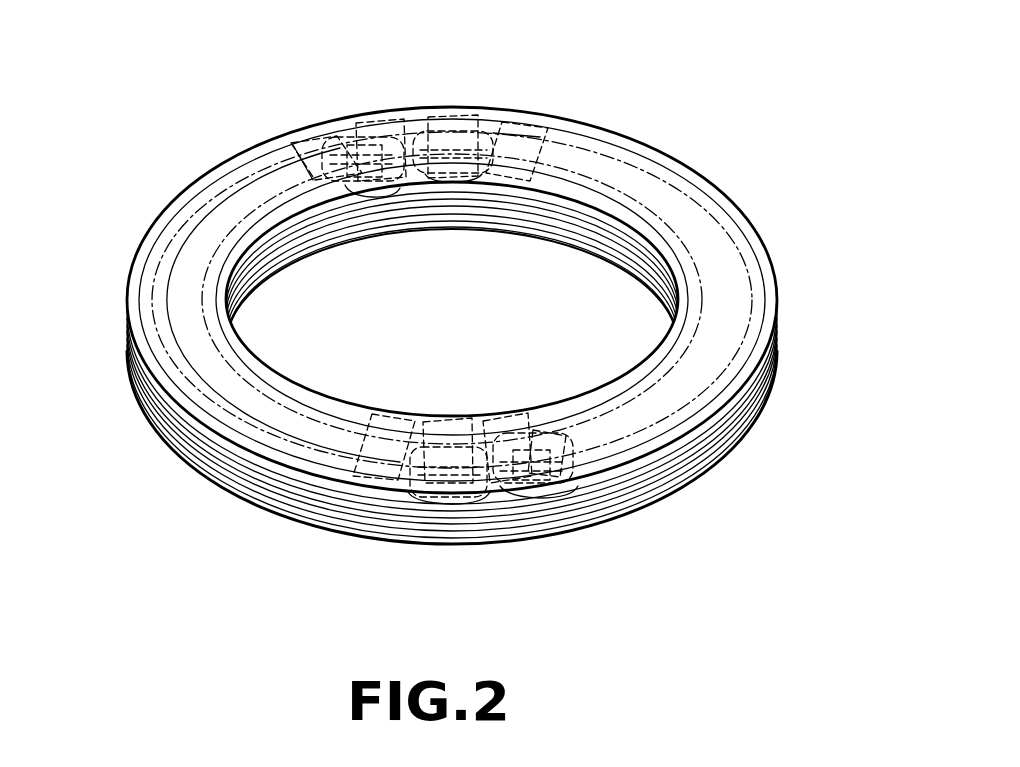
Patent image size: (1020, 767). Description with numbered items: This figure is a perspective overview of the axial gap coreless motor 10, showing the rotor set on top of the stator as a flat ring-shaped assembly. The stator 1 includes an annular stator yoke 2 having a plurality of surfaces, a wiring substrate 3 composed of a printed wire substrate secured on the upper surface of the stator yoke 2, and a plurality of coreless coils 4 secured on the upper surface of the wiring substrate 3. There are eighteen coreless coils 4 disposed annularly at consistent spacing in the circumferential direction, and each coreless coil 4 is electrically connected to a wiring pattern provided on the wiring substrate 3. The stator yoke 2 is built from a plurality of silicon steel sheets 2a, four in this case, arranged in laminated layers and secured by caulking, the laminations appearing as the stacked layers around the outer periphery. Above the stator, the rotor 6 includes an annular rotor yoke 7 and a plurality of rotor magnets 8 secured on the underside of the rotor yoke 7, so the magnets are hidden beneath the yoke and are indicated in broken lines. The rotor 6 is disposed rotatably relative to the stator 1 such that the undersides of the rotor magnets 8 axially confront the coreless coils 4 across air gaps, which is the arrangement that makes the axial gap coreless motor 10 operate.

The axial gap coreless motor 10 is at (634, 115).
The stator 1 is at (622, 519).
The stator yoke 2 is at (542, 535).
The silicon steel sheet 2a is at (495, 537).
The wiring substrate 3 is at (381, 512).
The coreless coil 4 is at (371, 196).
The rotor 6 is at (690, 151).
The rotor yoke 7 is at (722, 200).
The rotor magnet 8 is at (513, 121).